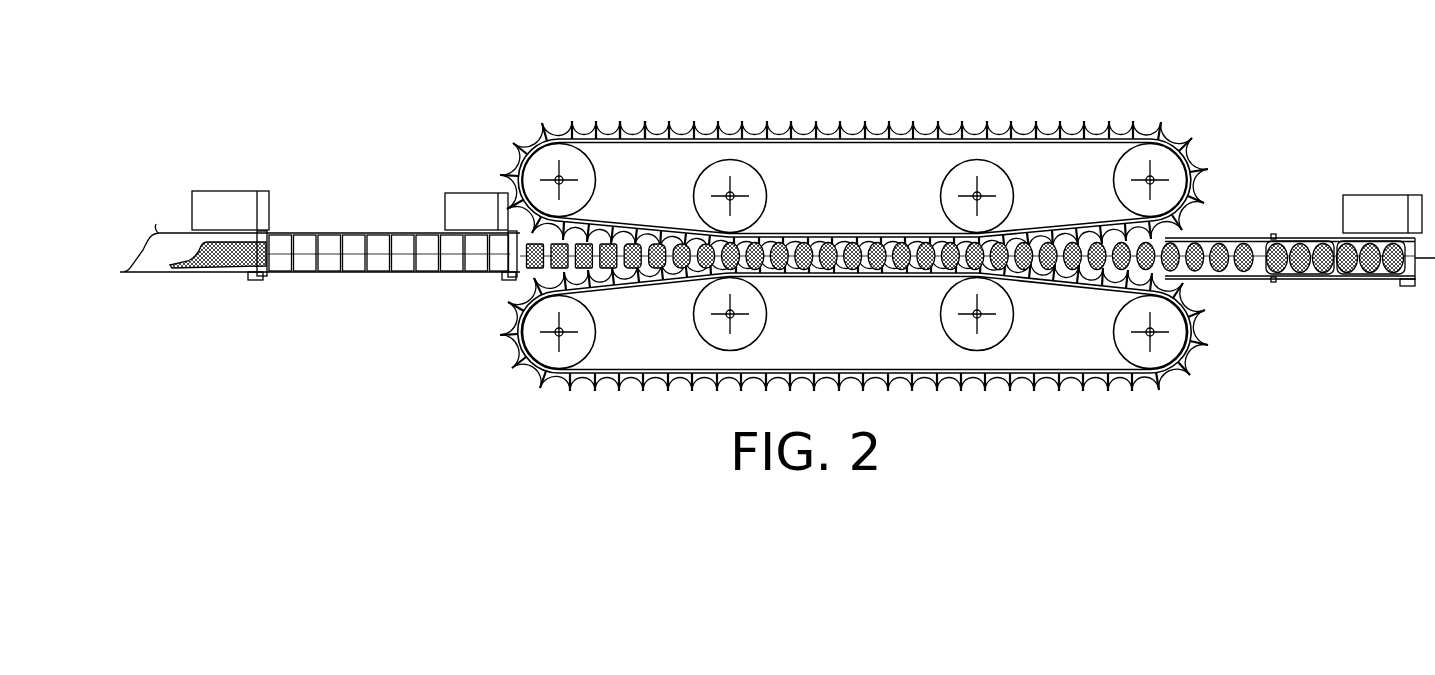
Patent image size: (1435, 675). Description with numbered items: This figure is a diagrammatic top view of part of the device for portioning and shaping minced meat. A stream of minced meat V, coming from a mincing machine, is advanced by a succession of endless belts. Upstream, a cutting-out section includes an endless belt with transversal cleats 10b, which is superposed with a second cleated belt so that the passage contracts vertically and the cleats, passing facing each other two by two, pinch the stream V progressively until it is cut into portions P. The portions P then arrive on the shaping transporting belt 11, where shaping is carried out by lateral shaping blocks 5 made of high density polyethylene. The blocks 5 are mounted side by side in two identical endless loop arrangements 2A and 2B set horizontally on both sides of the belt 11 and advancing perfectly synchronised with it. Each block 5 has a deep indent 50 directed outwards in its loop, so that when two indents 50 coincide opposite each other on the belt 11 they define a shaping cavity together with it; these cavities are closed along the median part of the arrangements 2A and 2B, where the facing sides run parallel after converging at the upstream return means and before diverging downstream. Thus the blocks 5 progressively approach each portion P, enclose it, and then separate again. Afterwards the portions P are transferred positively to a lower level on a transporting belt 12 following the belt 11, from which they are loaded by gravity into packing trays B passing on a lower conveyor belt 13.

The endless loop arrangement 2A is at (1017, 407).
The endless loop arrangement 2B is at (916, 108).
The lateral shaping blocks 5 is at (1047, 130).
The deep indents 50 is at (637, 128).
The portions P is at (1232, 247).
The packing trays B is at (1310, 243).
The stream of minced meat V is at (230, 264).
The endless belt with transversal cleats 10b is at (350, 263).
The shaping transporting belt 11 is at (537, 277).
The transporting belt 12 is at (1217, 274).
The lower conveyor belt 13 is at (1328, 280).